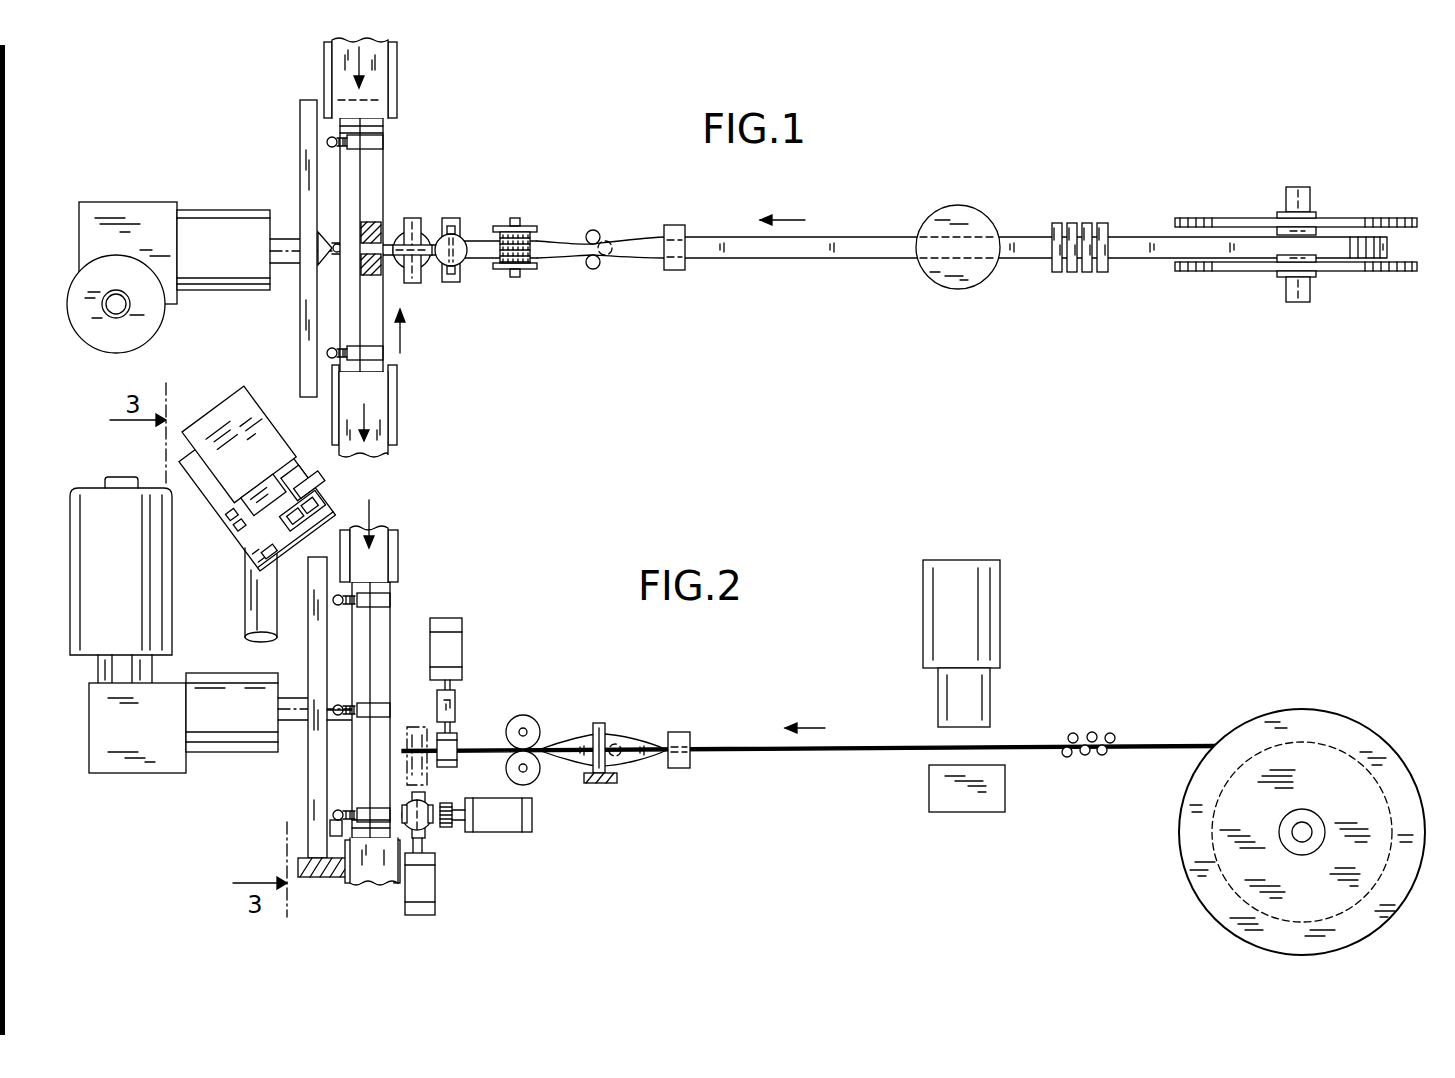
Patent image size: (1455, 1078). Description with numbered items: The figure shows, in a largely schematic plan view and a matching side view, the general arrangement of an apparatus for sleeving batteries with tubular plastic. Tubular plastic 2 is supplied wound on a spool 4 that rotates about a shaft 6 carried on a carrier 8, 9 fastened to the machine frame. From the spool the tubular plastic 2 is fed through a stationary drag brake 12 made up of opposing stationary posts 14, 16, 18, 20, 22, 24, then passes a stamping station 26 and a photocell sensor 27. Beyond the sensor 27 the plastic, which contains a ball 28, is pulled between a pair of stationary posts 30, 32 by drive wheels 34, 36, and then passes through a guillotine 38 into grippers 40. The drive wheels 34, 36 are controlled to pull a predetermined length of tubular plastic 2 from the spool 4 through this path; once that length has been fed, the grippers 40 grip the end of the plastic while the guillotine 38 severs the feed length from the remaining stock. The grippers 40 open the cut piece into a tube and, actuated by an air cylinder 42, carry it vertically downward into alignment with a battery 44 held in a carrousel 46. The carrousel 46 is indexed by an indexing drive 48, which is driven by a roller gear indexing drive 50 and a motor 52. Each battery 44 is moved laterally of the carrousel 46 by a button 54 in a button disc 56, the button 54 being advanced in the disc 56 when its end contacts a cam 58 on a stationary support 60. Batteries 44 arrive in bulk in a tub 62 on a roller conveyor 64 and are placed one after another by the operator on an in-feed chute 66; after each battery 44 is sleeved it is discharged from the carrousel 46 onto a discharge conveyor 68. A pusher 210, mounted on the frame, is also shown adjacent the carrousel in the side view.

In FIG. 1, the tubular plastic 2 is at (826, 259).
In FIG. 2, the tubular plastic 2 is at (1182, 744).
In FIG. 1, the spool 4 is at (1389, 243).
In FIG. 2, the spool 4 is at (1318, 742).
In FIG. 1, the shaft 6 is at (1300, 201).
In FIG. 2, the shaft 6 is at (1305, 829).
In FIG. 1, the carrier 8 is at (1219, 222).
In FIG. 1, the carrier 9 is at (1236, 266).
In FIG. 1, the drag brake 12 is at (1083, 215).
In FIG. 2, the drag brake 12 is at (1101, 722).
In FIG. 1, the stationary post 14 is at (1064, 226).
In FIG. 2, the stationary post 14 is at (1068, 736).
In FIG. 1, the stationary post 16 is at (1086, 231).
In FIG. 2, the stationary post 16 is at (1091, 735).
In FIG. 1, the stationary post 18 is at (1103, 245).
In FIG. 2, the stationary post 18 is at (1112, 737).
In FIG. 1, the stationary post 20 is at (1054, 272).
In FIG. 2, the stationary post 20 is at (1065, 755).
In FIG. 1, the stationary post 22 is at (1076, 270).
In FIG. 2, the stationary post 22 is at (1087, 755).
In FIG. 1, the stationary post 24 is at (1097, 272).
In FIG. 2, the stationary post 24 is at (1105, 754).
In FIG. 1, the stamping station 26 is at (951, 282).
In FIG. 2, the stamping station 26 is at (985, 570).
In FIG. 1, the photocell sensor 27 is at (683, 268).
In FIG. 2, the photocell sensor 27 is at (681, 761).
In FIG. 1, the ball 28 is at (611, 256).
In FIG. 2, the ball 28 is at (622, 742).
In FIG. 1, the stationary post 30 is at (594, 270).
In FIG. 2, the stationary post 30 is at (602, 771).
In FIG. 1, the stationary post 32 is at (594, 230).
In FIG. 2, the stationary post 32 is at (600, 722).
In FIG. 1, the drive wheel 34 is at (521, 225).
In FIG. 2, the drive wheel 34 is at (535, 723).
In FIG. 1, the drive wheel 36 is at (521, 266).
In FIG. 2, the drive wheel 36 is at (534, 774).
In FIG. 1, the guillotine 38 is at (465, 214).
In FIG. 2, the guillotine 38 is at (468, 697).
In FIG. 1, the grippers 40 is at (414, 213).
In FIG. 2, the grippers 40 is at (415, 710).
In FIG. 2, the air cylinder 42 is at (426, 878).
In FIG. 2, the battery 44 is at (288, 483).
In FIG. 1, the carrousel 46 is at (374, 166).
In FIG. 2, the carrousel 46 is at (383, 570).
In FIG. 1, the indexing drive 48 is at (212, 264).
In FIG. 2, the indexing drive 48 is at (218, 724).
In FIG. 1, the roller gear indexing drive 50 is at (125, 208).
In FIG. 2, the roller gear indexing drive 50 is at (123, 736).
In FIG. 1, the motor 52 is at (150, 322).
In FIG. 2, the motor 52 is at (103, 579).
In FIG. 1, the button 54 is at (332, 254).
In FIG. 2, the button 54 is at (330, 722).
In FIG. 2, the button disc 56 is at (268, 623).
In FIG. 1, the cam 58 is at (334, 248).
In FIG. 2, the cam 58 is at (336, 832).
In FIG. 1, the stationary support 60 is at (306, 129).
In FIG. 2, the stationary support 60 is at (318, 822).
In FIG. 2, the tub 62 is at (222, 412).
In FIG. 2, the roller conveyor 64 is at (209, 516).
In FIG. 1, the in-feed chute 66 is at (337, 67).
In FIG. 2, the in-feed chute 66 is at (383, 545).
In FIG. 1, the discharge conveyor 68 is at (383, 418).
In FIG. 2, the discharge conveyor 68 is at (372, 872).
In FIG. 2, the pusher 210 is at (505, 838).